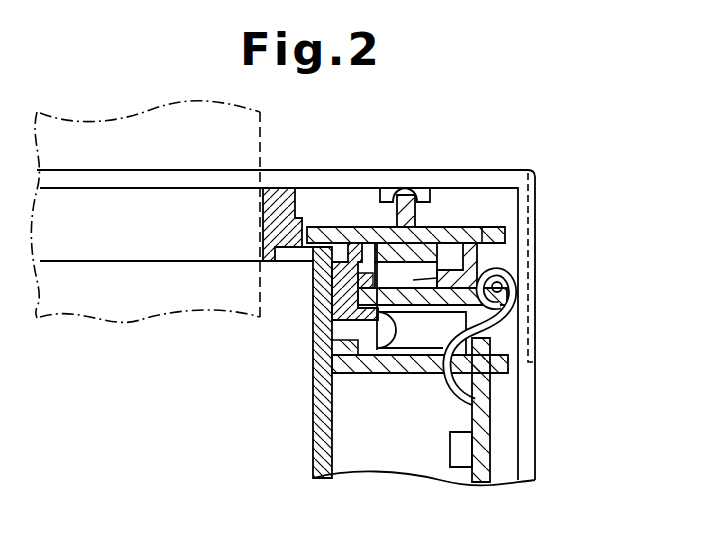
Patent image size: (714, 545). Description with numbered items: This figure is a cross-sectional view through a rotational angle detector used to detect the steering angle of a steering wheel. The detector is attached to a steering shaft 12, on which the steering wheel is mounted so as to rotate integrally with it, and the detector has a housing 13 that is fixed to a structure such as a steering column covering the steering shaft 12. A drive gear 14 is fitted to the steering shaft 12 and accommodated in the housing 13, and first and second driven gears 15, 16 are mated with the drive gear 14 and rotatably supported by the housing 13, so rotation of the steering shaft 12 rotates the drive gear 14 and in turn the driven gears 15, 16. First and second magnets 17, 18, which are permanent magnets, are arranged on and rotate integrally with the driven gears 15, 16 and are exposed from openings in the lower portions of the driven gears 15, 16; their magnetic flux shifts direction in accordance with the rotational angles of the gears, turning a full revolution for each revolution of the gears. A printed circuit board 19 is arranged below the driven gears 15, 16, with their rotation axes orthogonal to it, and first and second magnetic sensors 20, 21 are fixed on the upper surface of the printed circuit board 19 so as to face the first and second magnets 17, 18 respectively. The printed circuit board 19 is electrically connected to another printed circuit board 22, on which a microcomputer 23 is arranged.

The steering shaft 12 is at (110, 323).
The housing 13 is at (528, 385).
The drive gear 14 is at (289, 186).
The first driven gear 15 is at (406, 223).
The second driven gear 16 is at (368, 228).
The first magnet 17 is at (455, 207).
The second magnet 18 is at (440, 227).
The printed circuit board 19 is at (491, 296).
The first magnetic sensor 20 is at (538, 265).
The second magnetic sensor 21 is at (470, 290).
The printed circuit board 22 is at (483, 482).
The microcomputer 23 is at (452, 447).